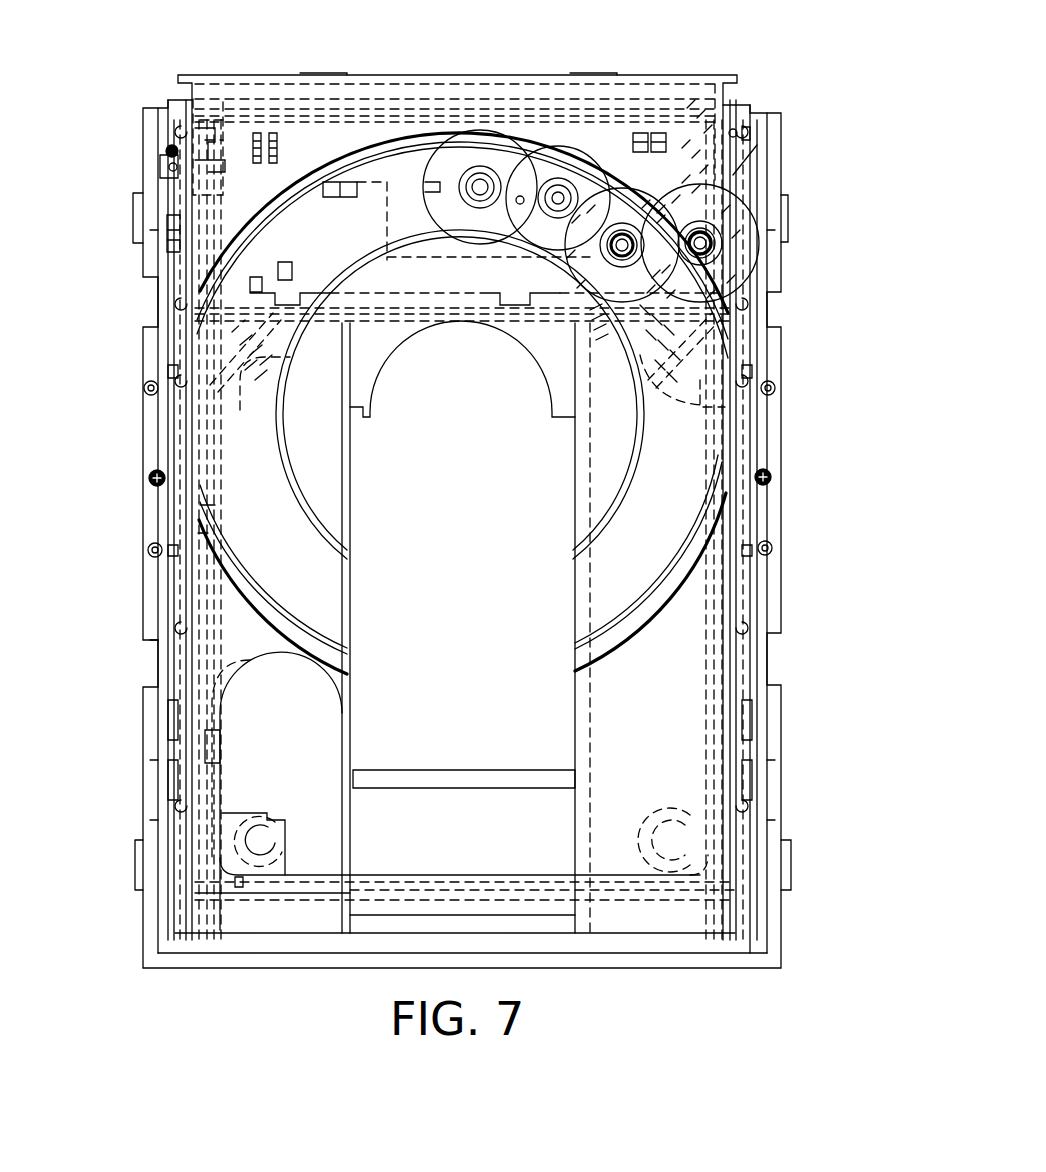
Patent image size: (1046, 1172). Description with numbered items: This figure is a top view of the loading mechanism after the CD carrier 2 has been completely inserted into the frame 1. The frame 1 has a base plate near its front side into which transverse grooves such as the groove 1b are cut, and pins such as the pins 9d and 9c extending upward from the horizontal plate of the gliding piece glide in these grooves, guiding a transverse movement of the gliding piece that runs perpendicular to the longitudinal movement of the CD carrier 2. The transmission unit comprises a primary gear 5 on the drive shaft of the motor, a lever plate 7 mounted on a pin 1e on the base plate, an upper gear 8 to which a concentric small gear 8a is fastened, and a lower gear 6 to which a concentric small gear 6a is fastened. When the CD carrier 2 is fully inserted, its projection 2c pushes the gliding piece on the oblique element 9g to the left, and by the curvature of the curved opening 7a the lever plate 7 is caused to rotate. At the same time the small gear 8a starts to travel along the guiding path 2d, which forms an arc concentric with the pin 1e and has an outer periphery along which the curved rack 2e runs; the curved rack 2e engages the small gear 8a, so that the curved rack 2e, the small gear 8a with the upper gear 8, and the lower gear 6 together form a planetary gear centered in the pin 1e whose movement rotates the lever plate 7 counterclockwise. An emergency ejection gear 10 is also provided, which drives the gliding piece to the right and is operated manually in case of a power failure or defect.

The frame 1 is at (772, 728).
The transverse groove 1b is at (388, 182).
The pin 1e is at (563, 243).
The CD carrier 2 is at (317, 838).
The projection 2c is at (262, 292).
The guiding path 2d is at (690, 135).
The curved rack 2e is at (706, 153).
The primary gear 5 is at (560, 178).
The lower gear 6 is at (624, 232).
The small gear 6a is at (614, 242).
The lever plate 7 is at (568, 292).
The curved opening 7a is at (612, 270).
The upper gear 8 is at (752, 243).
The small gear 8a is at (712, 235).
The pin 9c is at (612, 275).
The pin 9d is at (350, 182).
The oblique element 9g is at (262, 302).
The emergency ejection gear 10 is at (476, 147).